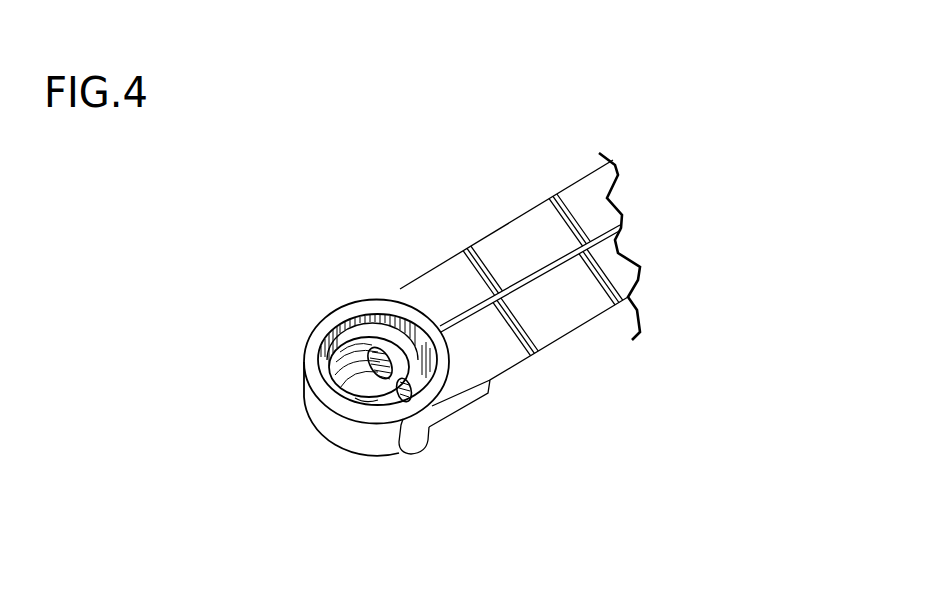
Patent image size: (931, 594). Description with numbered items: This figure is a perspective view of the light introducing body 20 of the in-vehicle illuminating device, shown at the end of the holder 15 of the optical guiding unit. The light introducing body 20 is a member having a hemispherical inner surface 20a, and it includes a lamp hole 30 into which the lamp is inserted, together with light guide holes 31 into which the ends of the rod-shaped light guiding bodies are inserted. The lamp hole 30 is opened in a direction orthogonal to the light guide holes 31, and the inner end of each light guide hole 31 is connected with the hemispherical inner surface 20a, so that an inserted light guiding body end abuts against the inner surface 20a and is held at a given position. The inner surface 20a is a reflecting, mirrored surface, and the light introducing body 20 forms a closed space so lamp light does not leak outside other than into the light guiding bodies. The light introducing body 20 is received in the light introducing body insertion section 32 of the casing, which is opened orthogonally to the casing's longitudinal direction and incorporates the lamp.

The holder 15 is at (528, 228).
The light introducing body 20 is at (333, 417).
The hemispherical inner surface 20a is at (366, 398).
The lamp hole 30 is at (362, 323).
The light guide holes 31 is at (390, 385).
The light introducing body insertion section 32 is at (320, 378).